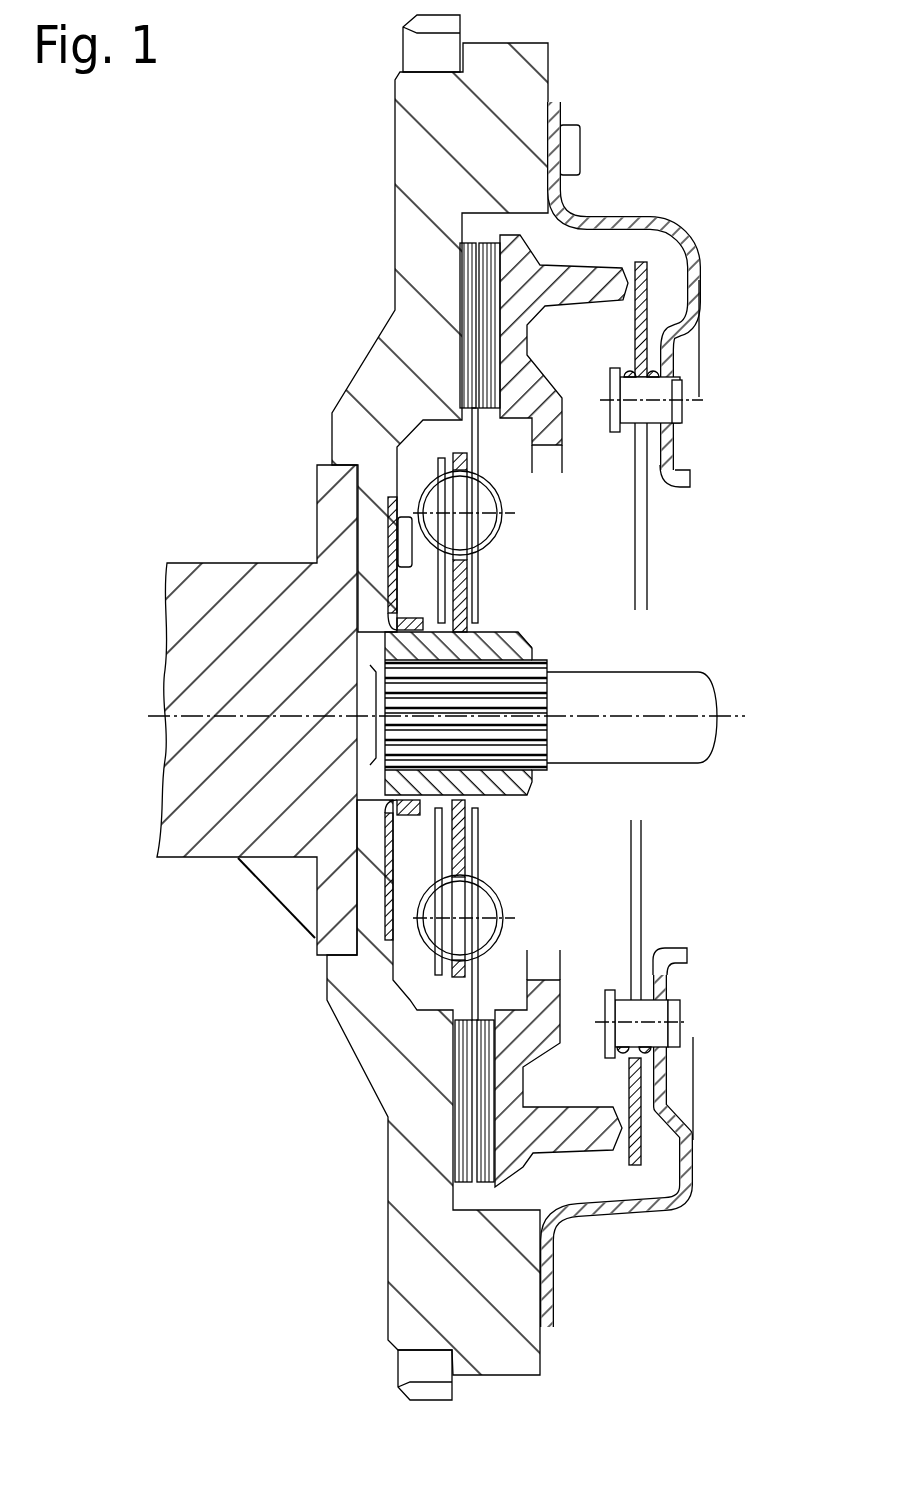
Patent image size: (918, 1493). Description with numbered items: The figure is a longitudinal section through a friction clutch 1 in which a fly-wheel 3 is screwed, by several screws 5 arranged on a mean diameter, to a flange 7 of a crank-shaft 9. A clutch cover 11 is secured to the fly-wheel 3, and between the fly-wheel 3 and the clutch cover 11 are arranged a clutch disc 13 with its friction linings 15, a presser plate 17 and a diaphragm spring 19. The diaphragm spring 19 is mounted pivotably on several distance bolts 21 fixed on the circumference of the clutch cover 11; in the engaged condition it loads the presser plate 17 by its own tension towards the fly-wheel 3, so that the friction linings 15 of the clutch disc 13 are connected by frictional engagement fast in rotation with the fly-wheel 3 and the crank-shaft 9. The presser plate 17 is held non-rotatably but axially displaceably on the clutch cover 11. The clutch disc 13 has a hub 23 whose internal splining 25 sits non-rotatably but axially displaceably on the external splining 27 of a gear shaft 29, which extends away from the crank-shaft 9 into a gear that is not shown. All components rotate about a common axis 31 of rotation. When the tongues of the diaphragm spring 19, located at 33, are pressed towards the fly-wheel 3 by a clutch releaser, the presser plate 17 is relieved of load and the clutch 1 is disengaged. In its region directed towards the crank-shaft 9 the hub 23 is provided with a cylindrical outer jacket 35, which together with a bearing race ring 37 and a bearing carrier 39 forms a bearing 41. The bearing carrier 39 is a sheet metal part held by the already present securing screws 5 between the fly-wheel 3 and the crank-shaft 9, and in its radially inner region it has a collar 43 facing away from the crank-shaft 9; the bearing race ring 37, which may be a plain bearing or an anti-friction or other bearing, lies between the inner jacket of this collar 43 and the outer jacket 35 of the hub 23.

The friction clutch 1 is at (368, 130).
The fly-wheel 3 is at (433, 205).
The screws 5 is at (387, 530).
The flange 7 is at (333, 897).
The crank-shaft 9 is at (210, 777).
The clutch cover 11 is at (687, 253).
The clutch disc 13 is at (420, 453).
The friction linings 15 is at (465, 307).
The presser plate 17 is at (587, 280).
The diaphragm spring 19 is at (643, 300).
The distance bolts 21 is at (647, 388).
The hub 23 is at (515, 637).
The internal splining 25 is at (575, 657).
The external splining 27 is at (540, 785).
The gear shaft 29 is at (668, 740).
The axis of rotation 31 is at (735, 712).
The tongues of the diaphragm spring 33 is at (677, 467).
The cylindrical outer jacket 35 is at (423, 817).
The bearing race ring 37 is at (237, 860).
The bearing carrier 39 is at (362, 910).
The bearing 41 is at (378, 613).
The collar 43 is at (408, 823).